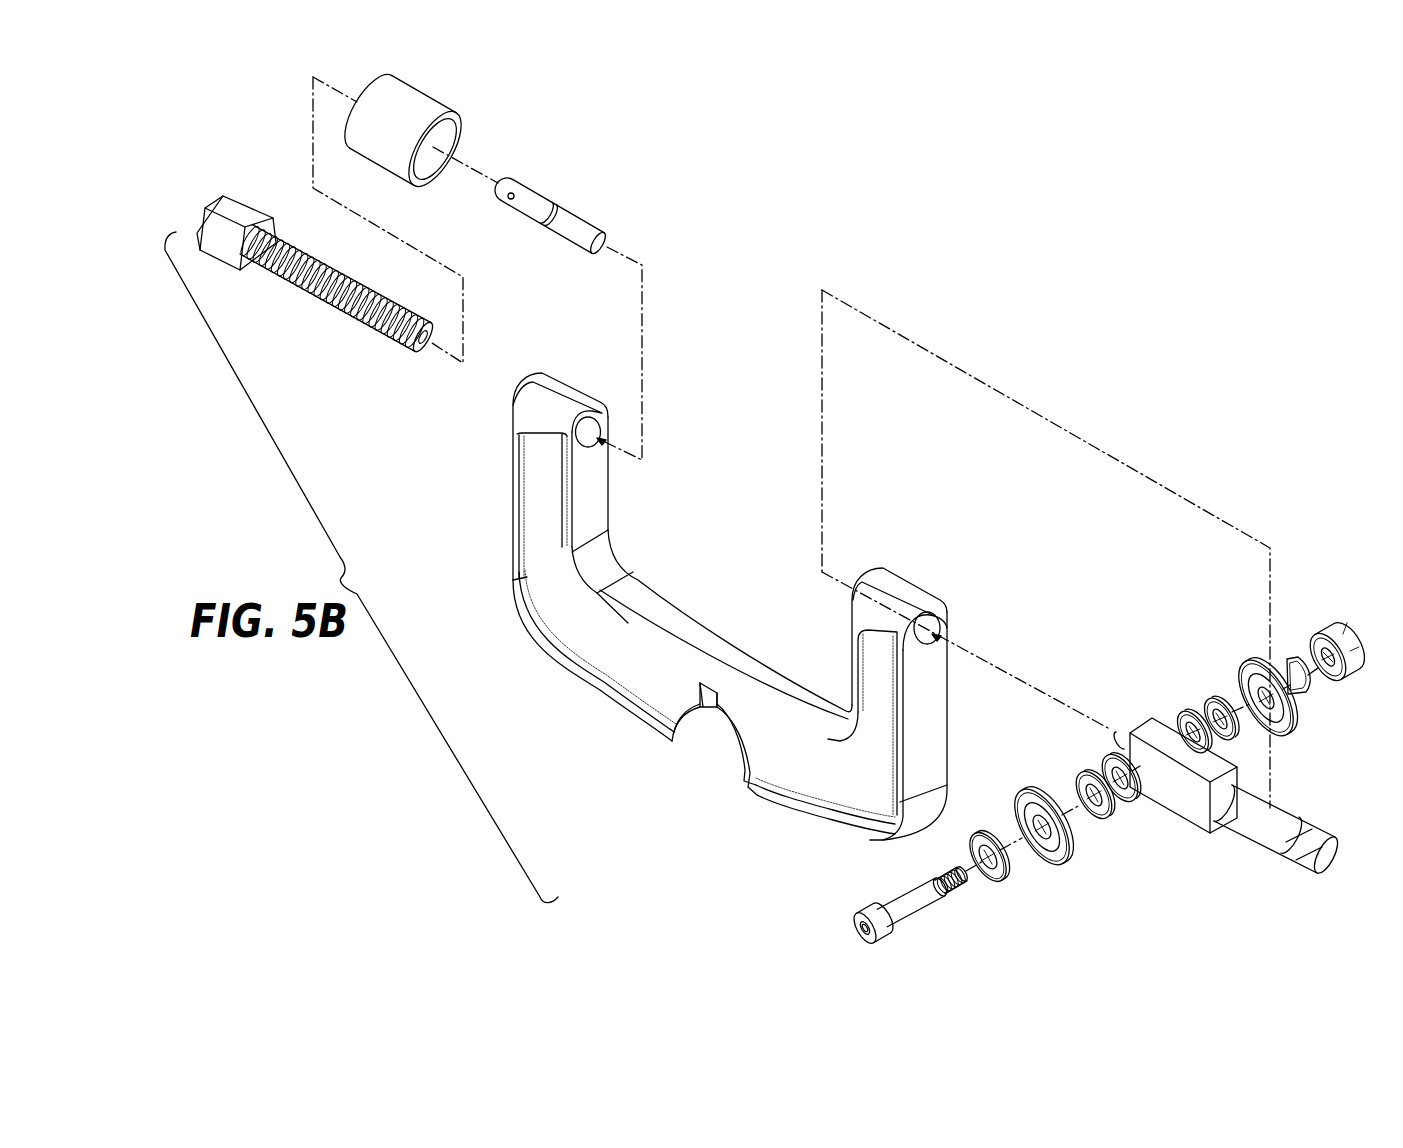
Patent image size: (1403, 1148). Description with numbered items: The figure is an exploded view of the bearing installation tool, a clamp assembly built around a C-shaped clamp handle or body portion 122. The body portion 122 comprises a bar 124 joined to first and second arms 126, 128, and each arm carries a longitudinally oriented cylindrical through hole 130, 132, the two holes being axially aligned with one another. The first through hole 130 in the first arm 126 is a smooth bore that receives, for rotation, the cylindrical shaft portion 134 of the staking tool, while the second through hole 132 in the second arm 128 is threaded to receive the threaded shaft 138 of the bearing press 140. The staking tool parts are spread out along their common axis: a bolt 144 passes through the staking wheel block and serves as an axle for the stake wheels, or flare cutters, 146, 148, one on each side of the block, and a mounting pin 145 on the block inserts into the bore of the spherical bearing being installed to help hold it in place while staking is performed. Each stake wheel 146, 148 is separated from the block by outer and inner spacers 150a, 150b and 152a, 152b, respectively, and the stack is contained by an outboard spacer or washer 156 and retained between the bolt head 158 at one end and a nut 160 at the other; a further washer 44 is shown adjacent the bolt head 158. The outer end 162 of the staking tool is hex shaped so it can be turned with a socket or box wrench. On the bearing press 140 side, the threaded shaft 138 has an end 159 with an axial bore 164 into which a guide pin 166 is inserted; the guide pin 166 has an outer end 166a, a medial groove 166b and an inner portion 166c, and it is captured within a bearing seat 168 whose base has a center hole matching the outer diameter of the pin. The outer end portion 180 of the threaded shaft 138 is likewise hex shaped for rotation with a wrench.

The C-shaped clamp handle or body portion 122 is at (683, 779).
The bar 124 is at (790, 790).
The first arm 126 is at (880, 676).
The second arm 128 is at (540, 488).
The first through hole 130 is at (932, 643).
The second through hole 132 is at (596, 445).
The cylindrical shaft portion 134 is at (1266, 832).
The threaded shaft 138 is at (356, 283).
The bearing press 140 is at (486, 144).
The bolt 144 is at (912, 890).
The mounting pin 145 is at (1116, 733).
The stake wheel 146 is at (1068, 838).
The stake wheel 148 is at (1252, 668).
The outer spacer 150a is at (1124, 802).
The inner spacer 150b is at (1098, 770).
The outer spacer 152a is at (1216, 698).
The inner spacer 152b is at (1190, 712).
The outboard spacer or washer 156 is at (1312, 692).
The bolt head 158 is at (868, 908).
The end of the shaft 159 is at (428, 350).
The nut 160 is at (1350, 636).
The outer end 162 is at (1298, 858).
The axial bore 164 is at (431, 340).
The guide pin 166 is at (541, 232).
The outer end 166a is at (601, 242).
The medial groove 166b is at (550, 211).
The inner portion 166c is at (508, 186).
The bearing seat 168 is at (418, 105).
The outer end portion 180 is at (224, 212).
The washer 44 is at (1003, 868).